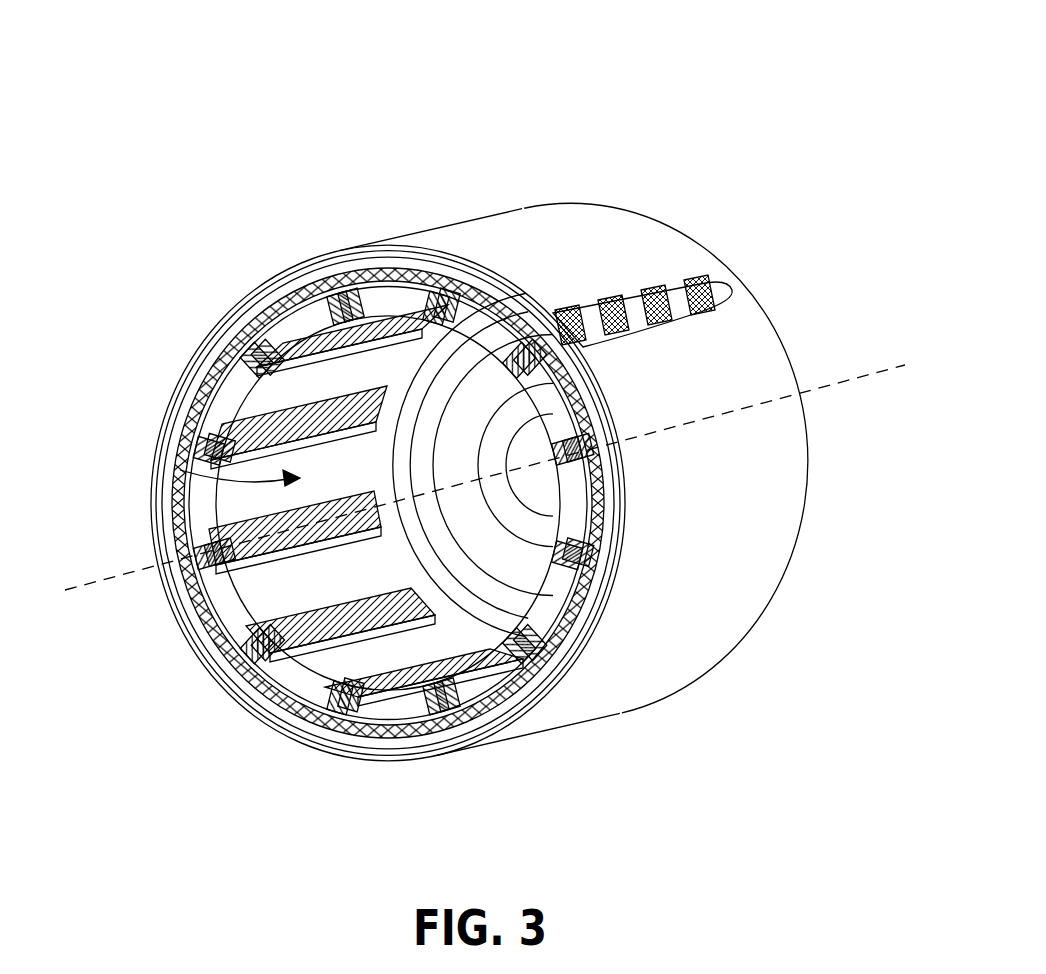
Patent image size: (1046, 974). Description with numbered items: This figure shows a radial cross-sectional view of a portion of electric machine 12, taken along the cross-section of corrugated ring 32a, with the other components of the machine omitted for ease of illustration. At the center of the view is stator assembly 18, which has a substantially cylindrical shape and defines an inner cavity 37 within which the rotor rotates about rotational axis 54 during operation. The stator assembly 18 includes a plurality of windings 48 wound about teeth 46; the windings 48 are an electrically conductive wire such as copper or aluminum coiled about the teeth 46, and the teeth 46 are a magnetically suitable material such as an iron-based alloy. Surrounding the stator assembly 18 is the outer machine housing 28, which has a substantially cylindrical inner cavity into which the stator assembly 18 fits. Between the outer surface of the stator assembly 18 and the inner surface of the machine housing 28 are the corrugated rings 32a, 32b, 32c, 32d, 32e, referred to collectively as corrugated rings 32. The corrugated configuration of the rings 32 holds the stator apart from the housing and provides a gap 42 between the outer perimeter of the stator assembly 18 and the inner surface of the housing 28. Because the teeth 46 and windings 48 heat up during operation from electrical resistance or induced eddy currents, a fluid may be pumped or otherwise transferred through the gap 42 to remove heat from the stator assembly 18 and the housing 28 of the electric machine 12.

The electric machine 12 is at (611, 66).
The stator assembly 18 is at (247, 693).
The machine housing 28 is at (370, 740).
The corrugated rings 32 is at (206, 372).
The corrugated ring 32a is at (538, 700).
The corrugated ring 32b is at (565, 318).
The corrugated ring 32c is at (605, 308).
The corrugated ring 32d is at (670, 290).
The corrugated ring 32e is at (725, 290).
The inner cavity 37 is at (185, 470).
The gap 42 is at (270, 303).
The teeth 46 is at (237, 618).
The windings 48 is at (205, 647).
The rotational axis 54 is at (500, 471).